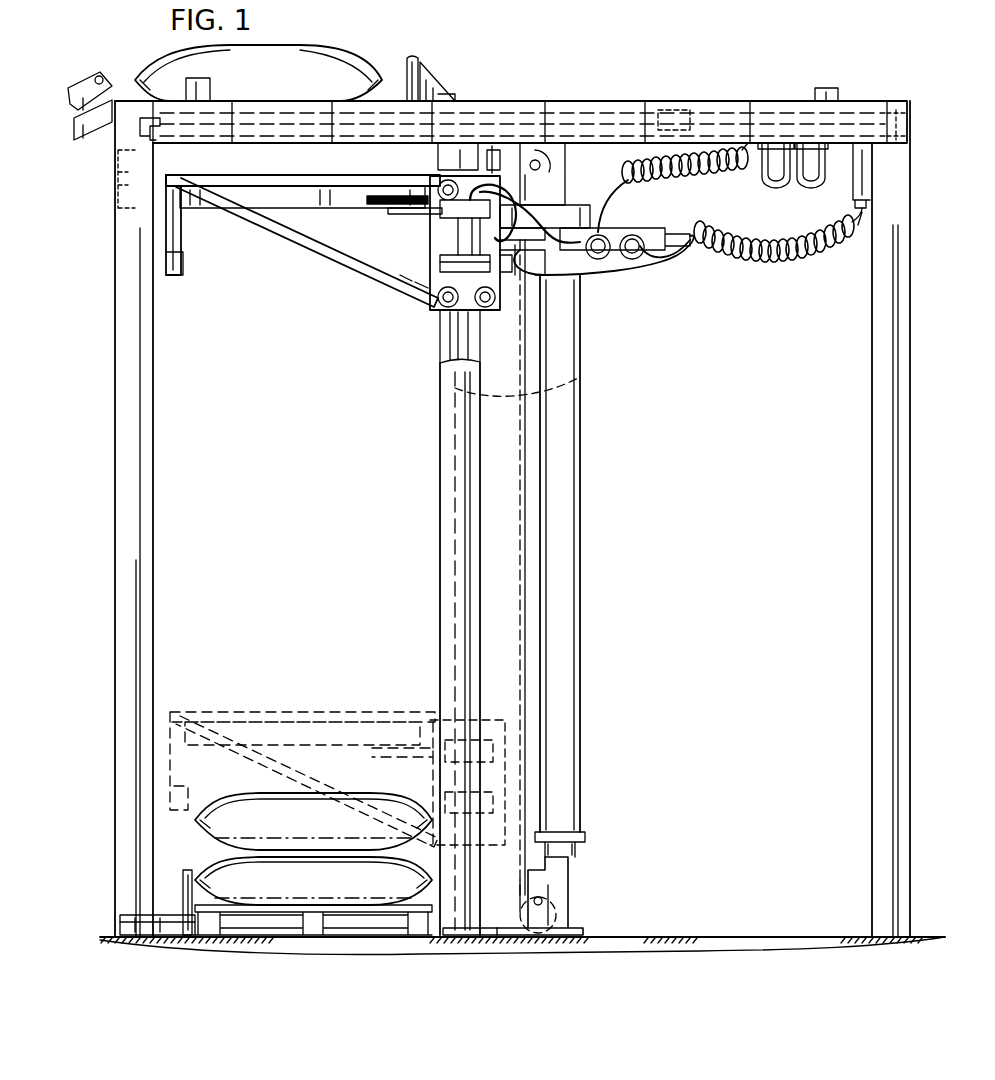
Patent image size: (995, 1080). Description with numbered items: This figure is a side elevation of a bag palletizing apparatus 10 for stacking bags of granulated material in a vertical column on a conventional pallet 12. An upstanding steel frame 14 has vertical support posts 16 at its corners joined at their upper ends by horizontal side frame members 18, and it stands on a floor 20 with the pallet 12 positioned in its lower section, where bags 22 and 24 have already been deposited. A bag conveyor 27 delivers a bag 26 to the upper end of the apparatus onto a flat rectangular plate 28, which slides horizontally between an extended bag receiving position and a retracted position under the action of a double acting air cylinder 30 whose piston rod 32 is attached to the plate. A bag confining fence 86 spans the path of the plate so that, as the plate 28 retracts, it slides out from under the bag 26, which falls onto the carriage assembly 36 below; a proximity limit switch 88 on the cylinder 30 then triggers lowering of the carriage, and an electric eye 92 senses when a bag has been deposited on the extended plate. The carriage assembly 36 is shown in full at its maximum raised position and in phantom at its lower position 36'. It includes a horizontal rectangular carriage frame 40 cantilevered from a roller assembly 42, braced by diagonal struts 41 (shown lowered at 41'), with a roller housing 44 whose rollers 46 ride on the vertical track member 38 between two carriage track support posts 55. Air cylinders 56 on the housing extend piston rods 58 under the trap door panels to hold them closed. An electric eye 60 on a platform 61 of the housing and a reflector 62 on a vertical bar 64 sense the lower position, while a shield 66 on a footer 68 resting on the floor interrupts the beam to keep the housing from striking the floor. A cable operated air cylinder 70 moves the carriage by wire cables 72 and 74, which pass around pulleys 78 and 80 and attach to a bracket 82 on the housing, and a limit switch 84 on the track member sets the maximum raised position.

The bag palletizing apparatus 10 is at (558, 52).
The pallet 12 is at (215, 924).
The frame 14 is at (530, 519).
The vertical support beams or posts 16 is at (140, 435).
The side frame members 18 is at (610, 110).
The floor 20 is at (690, 936).
The bag 22 is at (321, 882).
The bag 24 is at (323, 820).
The bag 26 is at (258, 59).
The bag conveyor 27 is at (88, 80).
The plate 28 is at (428, 92).
The double acting air cylinder 30 is at (655, 105).
The piston rod 32 is at (256, 136).
The carriage assembly 36 is at (303, 229).
The carriage assembly lower position 36' is at (337, 759).
The track member 38 is at (580, 380).
The carriage frame 40 is at (352, 166).
The diagonal struts 41 is at (307, 244).
The diagonal struts in lower position 41' is at (307, 759).
The roller assembly 42 is at (504, 300).
The roller housing 44 is at (477, 336).
The rollers 46 is at (426, 178).
The carriage track support posts 55 is at (440, 618).
The double acting air cylinders 56 is at (430, 240).
The piston rods 58 is at (396, 208).
The electric eye 60 is at (442, 266).
The platform 61 is at (462, 280).
The reflector 62 is at (182, 262).
The vertically extending bar 64 is at (176, 226).
The light beam interrupting shield 66 is at (186, 870).
The footer 68 is at (166, 921).
The cable operated double acting air cylinder 70 is at (568, 483).
The wire cable 72 is at (520, 428).
The wire cable 74 is at (548, 186).
The pulley 78 is at (572, 906).
The pulley 80 is at (560, 196).
The bracket 82 is at (510, 268).
The limit switch 84 is at (545, 205).
The bag confining rail or fence 86 is at (411, 55).
The proximity limit switch 88 is at (826, 88).
The electric eye 92 is at (212, 86).